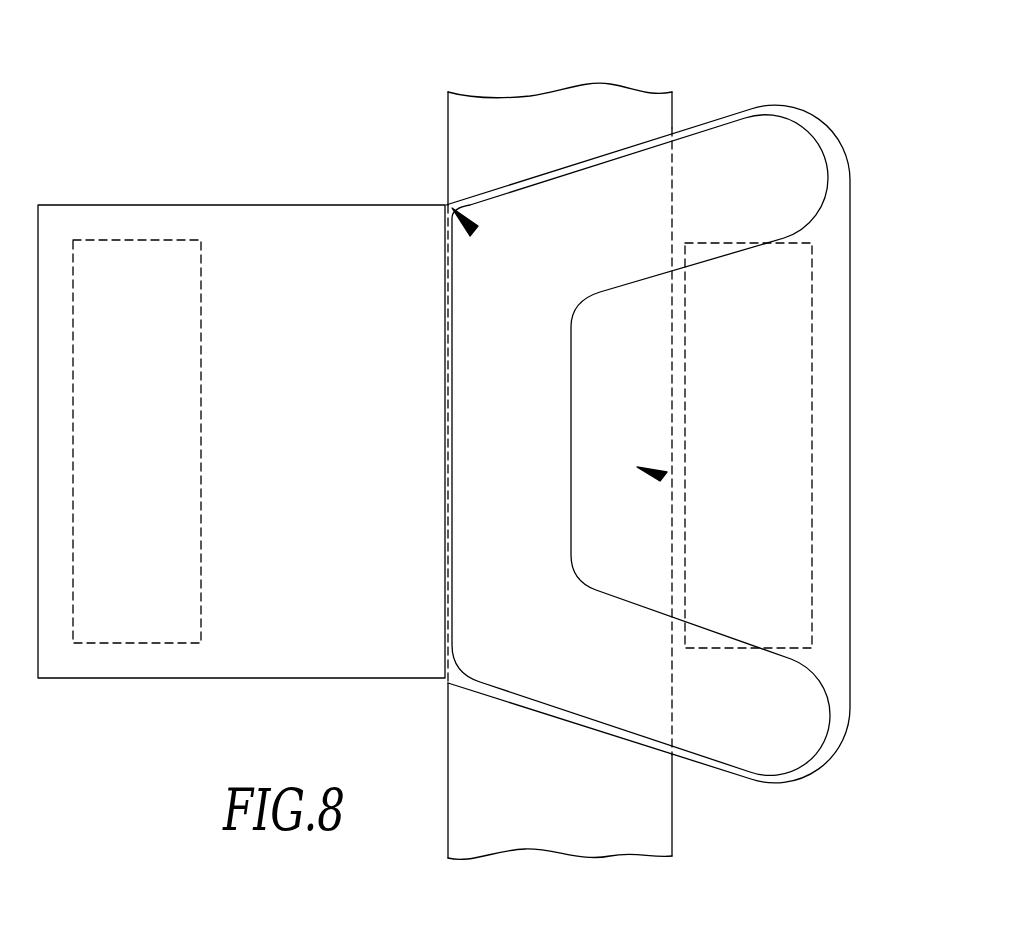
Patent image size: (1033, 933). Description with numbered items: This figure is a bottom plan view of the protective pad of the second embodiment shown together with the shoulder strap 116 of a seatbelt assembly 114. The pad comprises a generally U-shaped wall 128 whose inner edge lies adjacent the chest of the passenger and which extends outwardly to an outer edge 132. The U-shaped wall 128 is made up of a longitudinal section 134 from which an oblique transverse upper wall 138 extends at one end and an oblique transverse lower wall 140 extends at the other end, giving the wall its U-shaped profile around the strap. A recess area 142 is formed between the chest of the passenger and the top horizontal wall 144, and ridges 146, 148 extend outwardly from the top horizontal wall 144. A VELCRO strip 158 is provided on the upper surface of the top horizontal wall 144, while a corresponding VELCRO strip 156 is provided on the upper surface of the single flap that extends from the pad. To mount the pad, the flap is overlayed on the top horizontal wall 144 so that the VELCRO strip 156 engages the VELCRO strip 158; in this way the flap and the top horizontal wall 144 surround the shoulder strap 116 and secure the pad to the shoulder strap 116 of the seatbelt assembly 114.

The seatbelt assembly 114 is at (240, 204).
The shoulder strap 116 is at (522, 92).
The U-shaped wall 128 is at (446, 203).
The outer edge 132 is at (557, 395).
The longitudinal section 134 is at (480, 440).
The oblique transverse upper wall 138 is at (792, 131).
The oblique transverse lower wall 140 is at (790, 745).
The recess area 142 is at (664, 477).
The top horizontal wall 144 is at (853, 205).
The ridge 146 is at (718, 118).
The ridge 148 is at (722, 775).
The VELCRO strip 156 is at (202, 400).
The VELCRO strip 158 is at (800, 291).